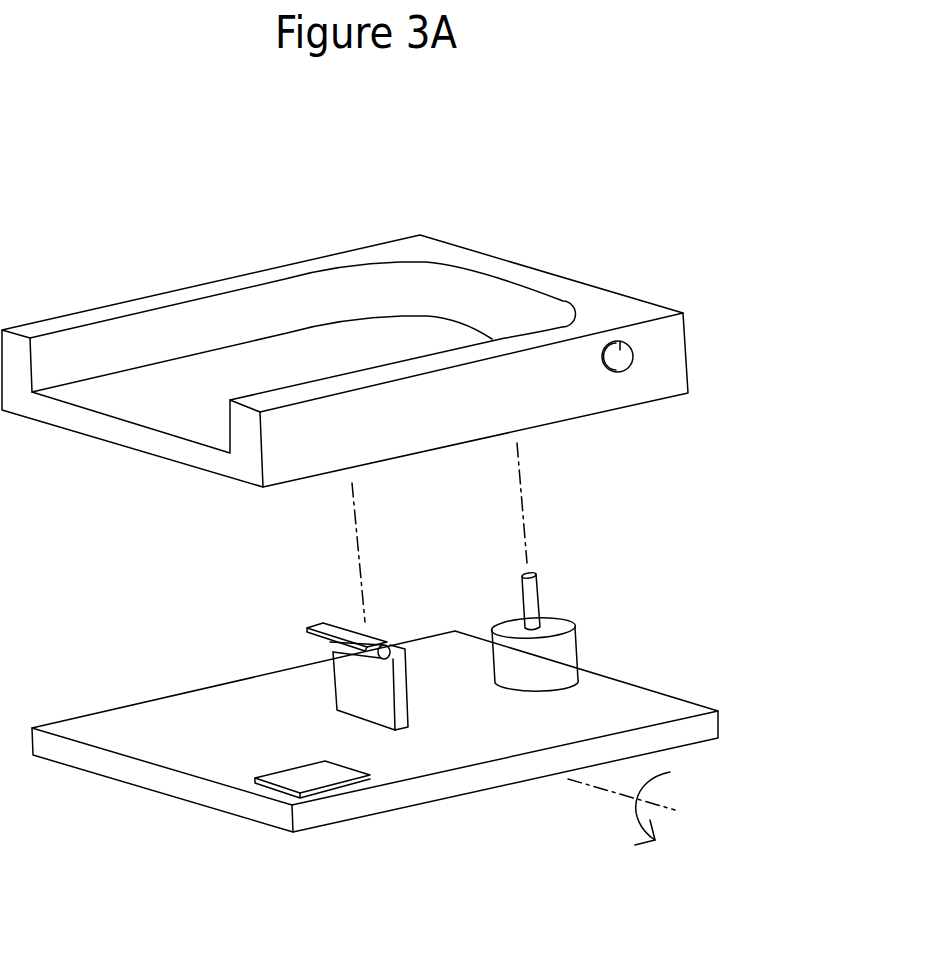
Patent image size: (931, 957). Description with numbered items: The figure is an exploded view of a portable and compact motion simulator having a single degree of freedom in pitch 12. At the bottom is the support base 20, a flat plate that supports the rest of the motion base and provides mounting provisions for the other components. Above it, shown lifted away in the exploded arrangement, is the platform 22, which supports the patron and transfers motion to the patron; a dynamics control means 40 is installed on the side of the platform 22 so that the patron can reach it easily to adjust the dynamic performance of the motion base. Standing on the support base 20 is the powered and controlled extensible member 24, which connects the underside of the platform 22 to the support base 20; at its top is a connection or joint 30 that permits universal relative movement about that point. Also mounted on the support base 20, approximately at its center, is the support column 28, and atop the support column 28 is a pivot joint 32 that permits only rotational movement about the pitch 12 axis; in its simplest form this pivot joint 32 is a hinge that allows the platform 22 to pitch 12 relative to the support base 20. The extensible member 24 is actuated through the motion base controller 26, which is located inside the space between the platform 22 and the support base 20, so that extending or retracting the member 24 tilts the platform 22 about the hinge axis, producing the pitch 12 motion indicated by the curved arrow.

The pitch 12 is at (631, 822).
The support base 20 is at (258, 823).
The platform 22 is at (687, 340).
The powered and controlled extensible member 24 is at (583, 658).
The motion base controller 26 is at (345, 783).
The support column 28 is at (330, 655).
The connection or joint 30 is at (537, 573).
The pivot joint 32 is at (317, 627).
The dynamics control means 40 is at (630, 370).